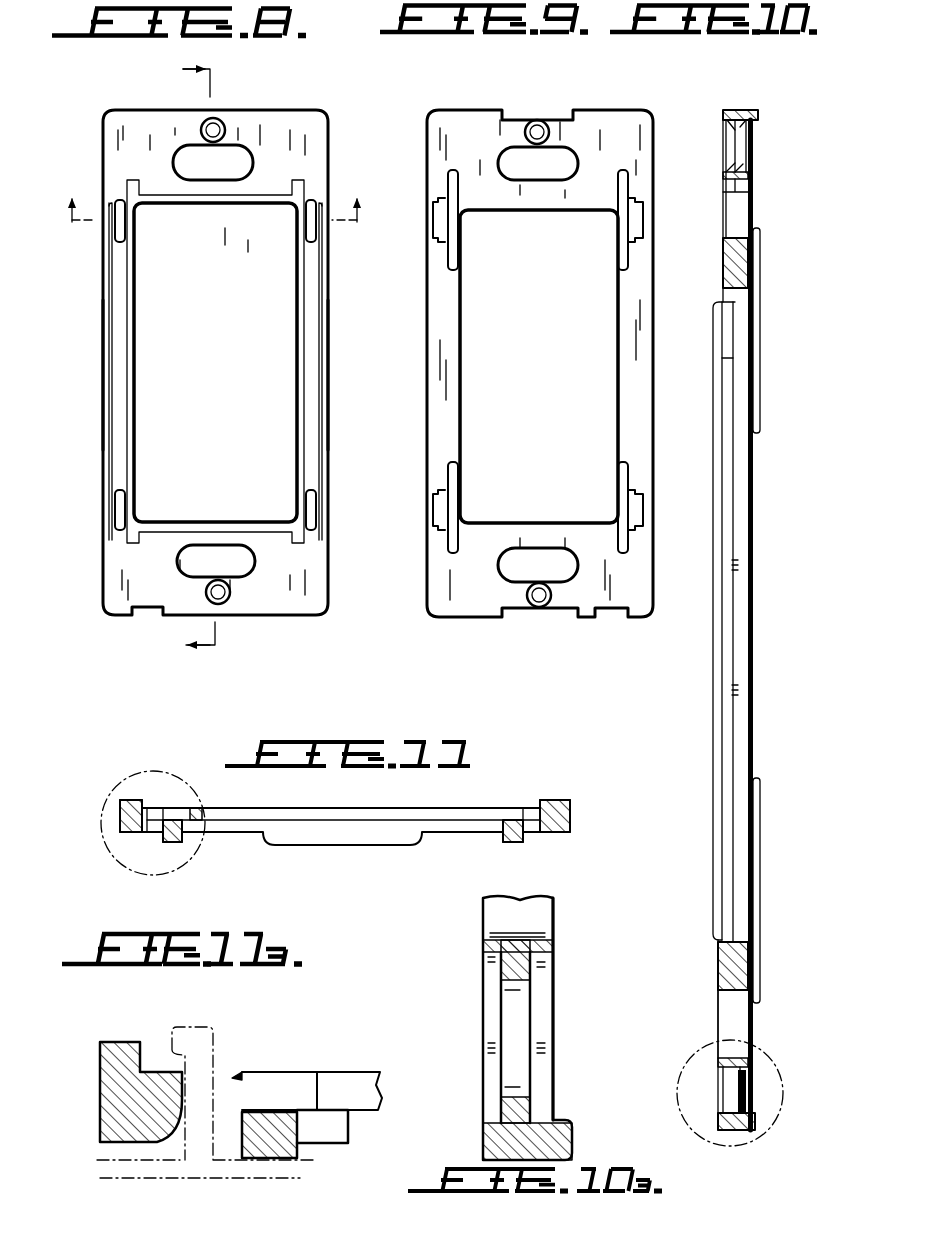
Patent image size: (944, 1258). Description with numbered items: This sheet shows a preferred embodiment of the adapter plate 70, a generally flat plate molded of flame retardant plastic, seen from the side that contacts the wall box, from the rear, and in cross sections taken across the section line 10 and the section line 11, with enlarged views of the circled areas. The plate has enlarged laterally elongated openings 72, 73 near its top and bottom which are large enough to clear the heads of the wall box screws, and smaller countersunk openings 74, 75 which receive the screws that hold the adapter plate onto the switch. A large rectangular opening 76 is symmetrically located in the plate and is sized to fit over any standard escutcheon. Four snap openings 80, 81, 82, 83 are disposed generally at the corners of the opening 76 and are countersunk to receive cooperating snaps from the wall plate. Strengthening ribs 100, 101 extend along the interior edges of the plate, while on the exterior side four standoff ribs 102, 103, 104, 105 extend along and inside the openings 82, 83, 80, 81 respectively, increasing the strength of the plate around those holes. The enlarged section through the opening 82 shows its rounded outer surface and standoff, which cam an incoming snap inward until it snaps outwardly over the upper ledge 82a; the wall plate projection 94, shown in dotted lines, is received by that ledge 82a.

In FIG. 8, the adapter plate 70 is at (103, 108).
In FIG. 9, the adapter plate 70 is at (490, 105).
In FIG. 10, the adapter plate 70 is at (756, 105).
In FIG. 11, the adapter plate 70 is at (484, 792).
In FIG. 11A, the adapter plate 70 is at (94, 1093).
In FIG. 10A, the adapter plate 70 is at (468, 998).
In FIG. 8, the laterally elongated opening 72 is at (243, 160).
In FIG. 9, the laterally elongated opening 72 is at (553, 158).
In FIG. 10, the laterally elongated opening 72 is at (751, 190).
In FIG. 8, the laterally elongated opening 73 is at (245, 572).
In FIG. 9, the laterally elongated opening 73 is at (505, 572).
In FIG. 10, the laterally elongated opening 73 is at (718, 998).
In FIG. 8, the opening 74 is at (218, 126).
In FIG. 9, the opening 74 is at (538, 128).
In FIG. 10, the opening 74 is at (751, 146).
In FIG. 8, the opening 75 is at (222, 599).
In FIG. 9, the opening 75 is at (540, 601).
In FIG. 10, the opening 75 is at (735, 1080).
In FIG. 10A, the opening 75 is at (520, 987).
In FIG. 9, the opening 76 is at (461, 380).
In FIG. 10, the opening 76 is at (734, 303).
In FIG. 11, the opening 76 is at (200, 810).
In FIG. 11A, the opening 76 is at (320, 1080).
In FIG. 8, the snap opening 80 is at (306, 222).
In FIG. 9, the snap opening 80 is at (445, 243).
In FIG. 11, the snap opening 80 is at (530, 815).
In FIG. 8, the snap opening 81 is at (306, 500).
In FIG. 9, the snap opening 81 is at (445, 530).
In FIG. 8, the snap opening 82 is at (125, 222).
In FIG. 9, the snap opening 82 is at (632, 243).
In FIG. 11, the snap opening 82 is at (157, 815).
In FIG. 11A, the snap opening 82 is at (243, 1075).
In FIG. 11A, the ledge 82a is at (157, 1070).
In FIG. 8, the snap opening 83 is at (123, 505).
In FIG. 9, the snap opening 83 is at (633, 530).
In FIG. 11A, the projection 94 is at (206, 1026).
In FIG. 8, the strengthening rib 100 is at (104, 370).
In FIG. 11, the strengthening rib 100 is at (128, 800).
In FIG. 11A, the strengthening rib 100 is at (100, 1042).
In FIG. 8, the strengthening rib 101 is at (330, 368).
In FIG. 10, the strengthening rib 101 is at (713, 697).
In FIG. 11, the strengthening rib 101 is at (560, 800).
In FIG. 9, the standoff rib 102 is at (456, 248).
In FIG. 11, the standoff rib 102 is at (508, 844).
In FIG. 9, the standoff rib 103 is at (456, 478).
In FIG. 9, the standoff rib 104 is at (618, 248).
In FIG. 10, the standoff rib 104 is at (760, 413).
In FIG. 11, the standoff rib 104 is at (178, 842).
In FIG. 11A, the standoff rib 104 is at (295, 1160).
In FIG. 9, the standoff rib 105 is at (619, 478).
In FIG. 10, the standoff rib 105 is at (757, 962).
In FIG. 8, the section line 10 is at (182, 358).
In FIG. 8, the section line 11 is at (221, 192).